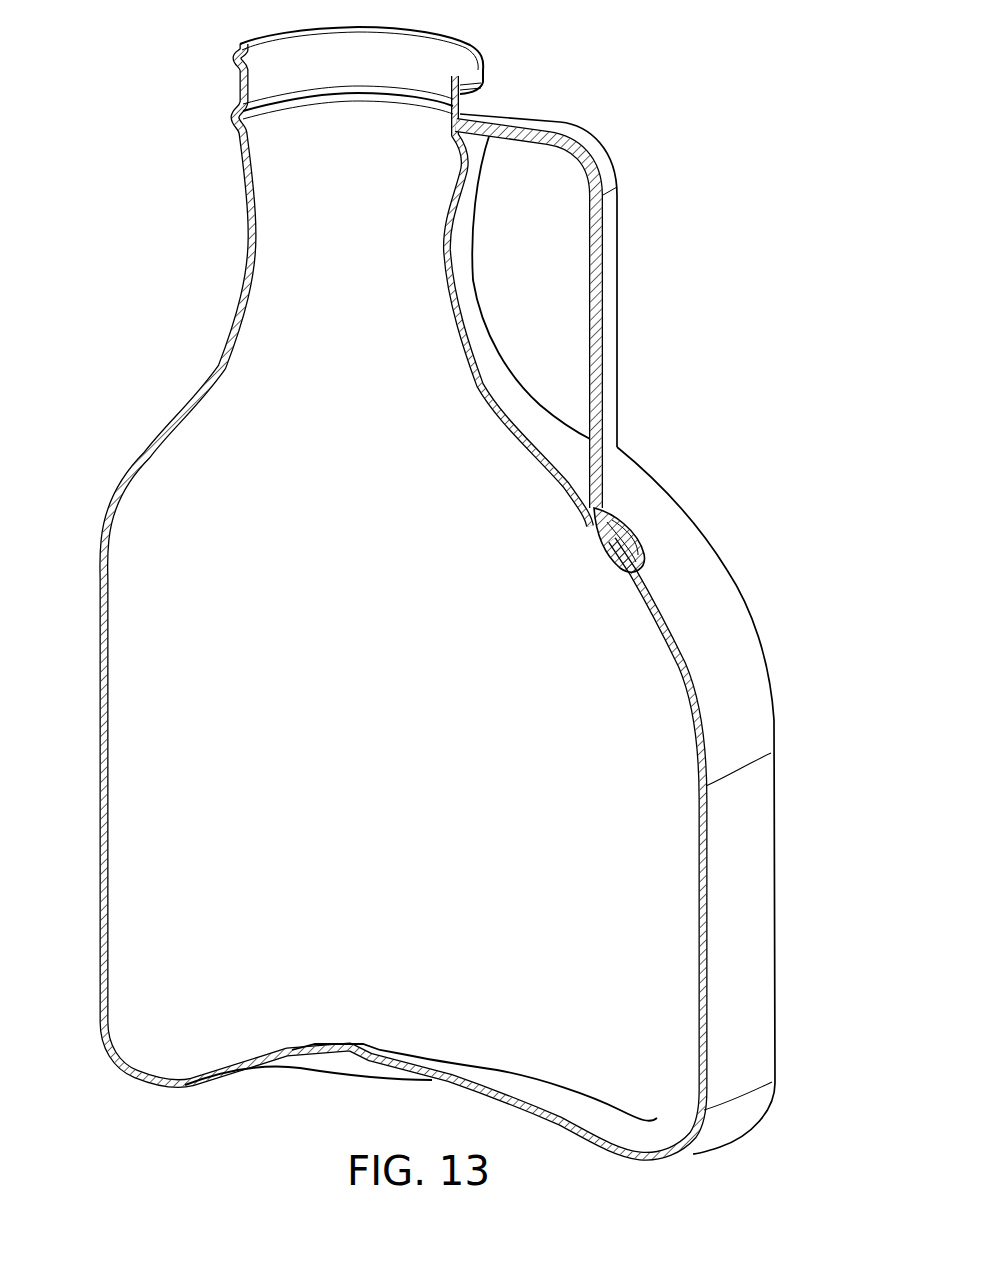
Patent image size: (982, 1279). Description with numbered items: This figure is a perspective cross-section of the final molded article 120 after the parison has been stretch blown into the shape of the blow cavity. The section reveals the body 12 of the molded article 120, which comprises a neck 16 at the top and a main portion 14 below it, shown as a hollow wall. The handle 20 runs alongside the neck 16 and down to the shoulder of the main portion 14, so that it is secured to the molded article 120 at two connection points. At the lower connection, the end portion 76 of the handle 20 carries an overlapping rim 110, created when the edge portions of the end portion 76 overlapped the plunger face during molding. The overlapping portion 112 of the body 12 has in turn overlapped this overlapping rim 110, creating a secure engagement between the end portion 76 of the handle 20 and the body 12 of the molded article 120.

The body 12 is at (786, 592).
The main portion 14 is at (118, 726).
The neck 16 is at (266, 62).
The handle 20 is at (656, 248).
The end portion 76 is at (607, 532).
The overlapping rim 110 is at (637, 551).
The overlapping portion 112 is at (618, 518).
The final molded article 120 is at (157, 332).